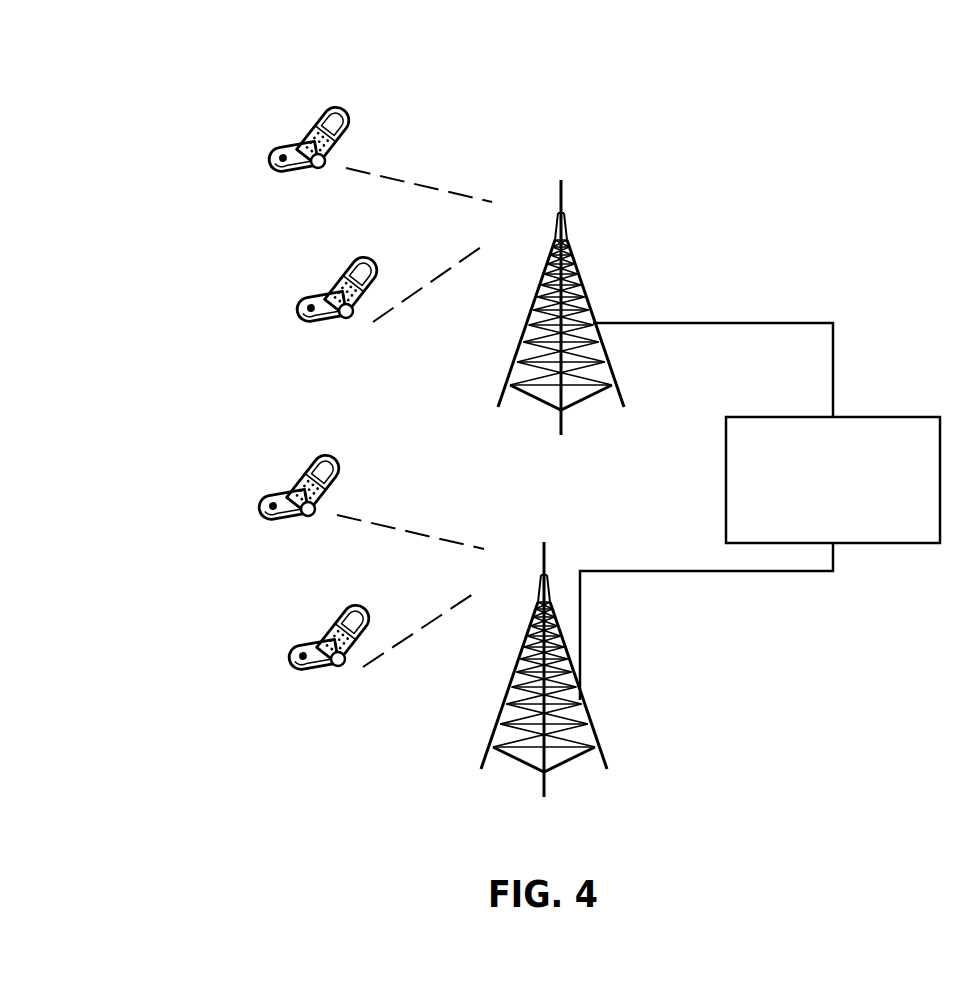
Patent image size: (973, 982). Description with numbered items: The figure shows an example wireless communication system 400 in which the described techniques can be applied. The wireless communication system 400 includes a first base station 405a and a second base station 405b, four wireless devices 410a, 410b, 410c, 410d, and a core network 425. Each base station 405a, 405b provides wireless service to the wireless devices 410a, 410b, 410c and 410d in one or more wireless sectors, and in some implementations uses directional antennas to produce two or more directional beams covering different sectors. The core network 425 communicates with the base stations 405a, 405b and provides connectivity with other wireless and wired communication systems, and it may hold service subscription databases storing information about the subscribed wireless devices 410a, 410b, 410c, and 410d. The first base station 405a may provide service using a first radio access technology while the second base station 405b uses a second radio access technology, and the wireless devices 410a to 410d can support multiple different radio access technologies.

The wireless communication system 400 is at (190, 35).
The wireless device 410a is at (300, 118).
The wireless device 410b is at (330, 268).
The wireless device 410c is at (240, 488).
The wireless device 410d is at (320, 616).
The first base station 405a is at (574, 262).
The second base station 405b is at (556, 578).
The core network 425 is at (738, 417).